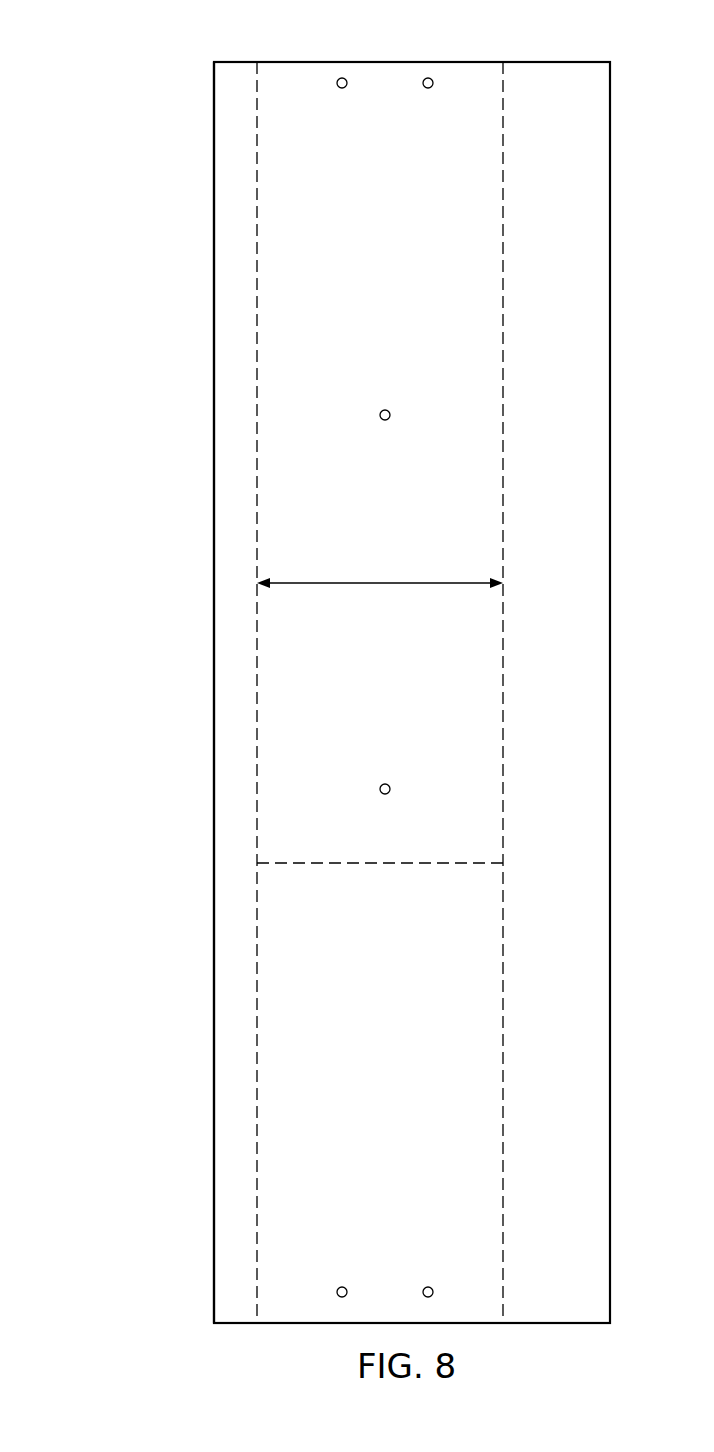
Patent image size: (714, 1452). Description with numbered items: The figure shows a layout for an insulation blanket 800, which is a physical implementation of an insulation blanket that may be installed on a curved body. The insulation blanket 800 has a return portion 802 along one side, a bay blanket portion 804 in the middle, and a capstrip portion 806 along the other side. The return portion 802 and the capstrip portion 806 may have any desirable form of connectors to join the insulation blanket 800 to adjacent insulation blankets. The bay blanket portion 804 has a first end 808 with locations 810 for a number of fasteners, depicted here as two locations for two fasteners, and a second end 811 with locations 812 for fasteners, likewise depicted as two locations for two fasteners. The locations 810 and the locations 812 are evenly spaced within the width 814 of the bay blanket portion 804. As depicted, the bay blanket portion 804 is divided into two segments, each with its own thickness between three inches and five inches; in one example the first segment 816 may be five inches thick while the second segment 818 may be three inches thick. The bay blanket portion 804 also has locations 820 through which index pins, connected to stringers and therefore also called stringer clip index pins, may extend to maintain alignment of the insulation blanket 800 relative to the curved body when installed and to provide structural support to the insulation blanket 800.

The insulation blanket 800 is at (80, 84).
The return portion 802 is at (211, 335).
The bay blanket portion 804 is at (399, 735).
The capstrip portion 806 is at (573, 464).
The first end 808 is at (298, 58).
The second end 811 is at (298, 1327).
The locations 810 is at (402, 100).
The locations 812 is at (381, 1280).
The width 814 is at (381, 583).
The first segment 816 is at (376, 241).
The second segment 818 is at (373, 1011).
The locations 820 is at (378, 398).